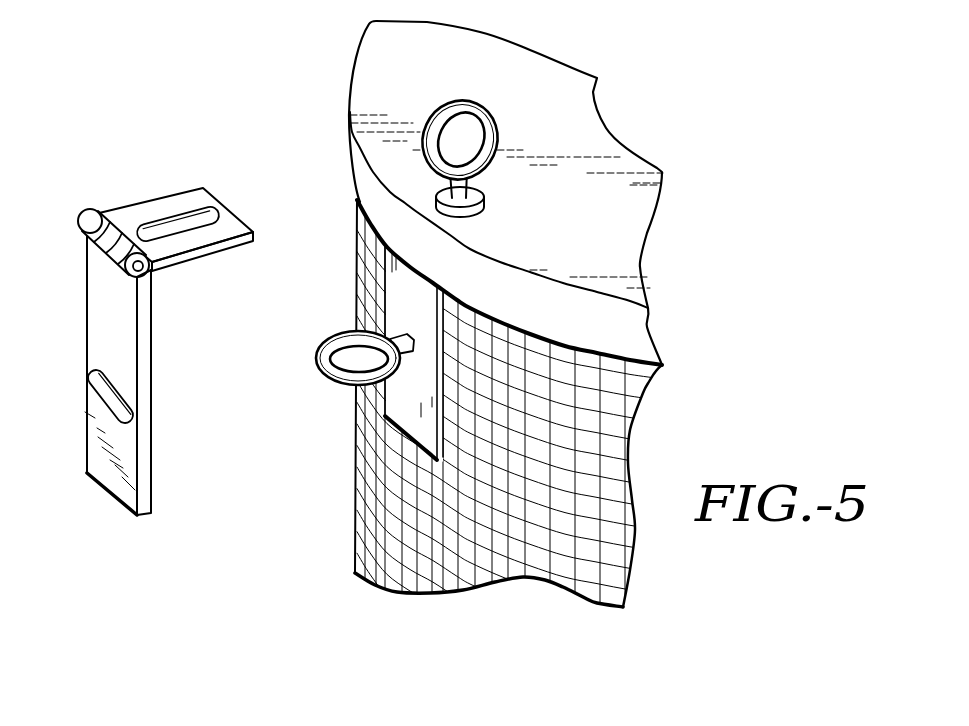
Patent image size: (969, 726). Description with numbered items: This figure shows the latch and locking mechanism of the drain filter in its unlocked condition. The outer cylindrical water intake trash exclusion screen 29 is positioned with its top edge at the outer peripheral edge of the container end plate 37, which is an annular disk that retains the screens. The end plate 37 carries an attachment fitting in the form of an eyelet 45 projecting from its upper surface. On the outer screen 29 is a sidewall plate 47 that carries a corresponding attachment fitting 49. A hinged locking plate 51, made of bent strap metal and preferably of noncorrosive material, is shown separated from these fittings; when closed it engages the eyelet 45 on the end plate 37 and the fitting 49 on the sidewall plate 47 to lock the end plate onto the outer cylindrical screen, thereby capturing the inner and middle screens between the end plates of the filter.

The water intake trash exclusion screen 29 is at (355, 537).
The container end plate 37 is at (391, 49).
The eyelet 45 is at (449, 100).
The sidewall plate 47 is at (403, 320).
The attachment fitting 49 is at (325, 355).
The hinged locking plate 51 is at (125, 340).